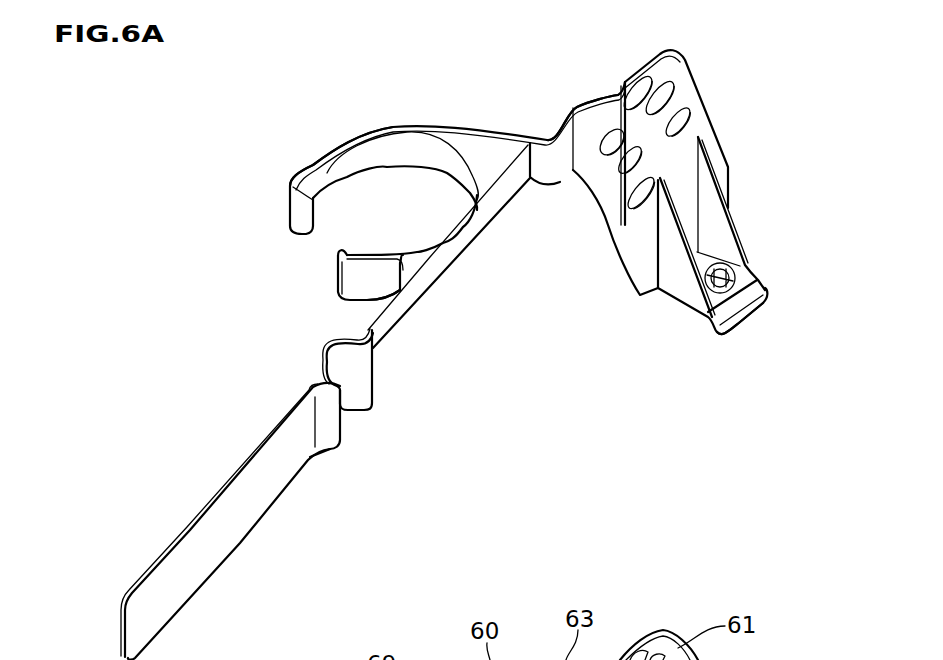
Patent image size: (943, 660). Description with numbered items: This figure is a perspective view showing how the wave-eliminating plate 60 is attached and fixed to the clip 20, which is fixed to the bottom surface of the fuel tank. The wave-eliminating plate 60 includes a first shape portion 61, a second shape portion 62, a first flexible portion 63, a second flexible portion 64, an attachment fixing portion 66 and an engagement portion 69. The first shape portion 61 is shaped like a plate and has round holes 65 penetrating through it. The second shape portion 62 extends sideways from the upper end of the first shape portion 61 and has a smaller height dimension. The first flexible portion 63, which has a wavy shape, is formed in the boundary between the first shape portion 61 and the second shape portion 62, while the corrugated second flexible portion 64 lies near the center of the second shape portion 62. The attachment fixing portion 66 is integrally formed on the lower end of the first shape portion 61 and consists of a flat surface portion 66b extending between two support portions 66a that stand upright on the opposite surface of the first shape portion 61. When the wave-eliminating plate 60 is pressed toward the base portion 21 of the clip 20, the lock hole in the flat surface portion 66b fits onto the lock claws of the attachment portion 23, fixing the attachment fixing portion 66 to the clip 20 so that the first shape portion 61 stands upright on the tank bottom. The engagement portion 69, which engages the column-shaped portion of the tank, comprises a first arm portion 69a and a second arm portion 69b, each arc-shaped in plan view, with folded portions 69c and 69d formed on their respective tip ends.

The clip 20 is at (767, 322).
The base portion 21 is at (750, 333).
The attachment portion 23 is at (720, 268).
The wave-eliminating plate 60 is at (474, 215).
The first shape portion 61 is at (672, 70).
The second shape portion 62 is at (210, 505).
The first flexible portion 63 is at (566, 108).
The second flexible portion 64 is at (322, 352).
The round holes 65 is at (690, 122).
The attachment fixing portion 66 is at (679, 307).
The support portions 66a is at (740, 230).
The flat surface portion 66b is at (747, 280).
The engagement portion 69 is at (387, 257).
The first arm portion 69a is at (325, 155).
The second arm portion 69b is at (368, 282).
The folded portion 69c is at (298, 212).
The folded portion 69d is at (340, 283).